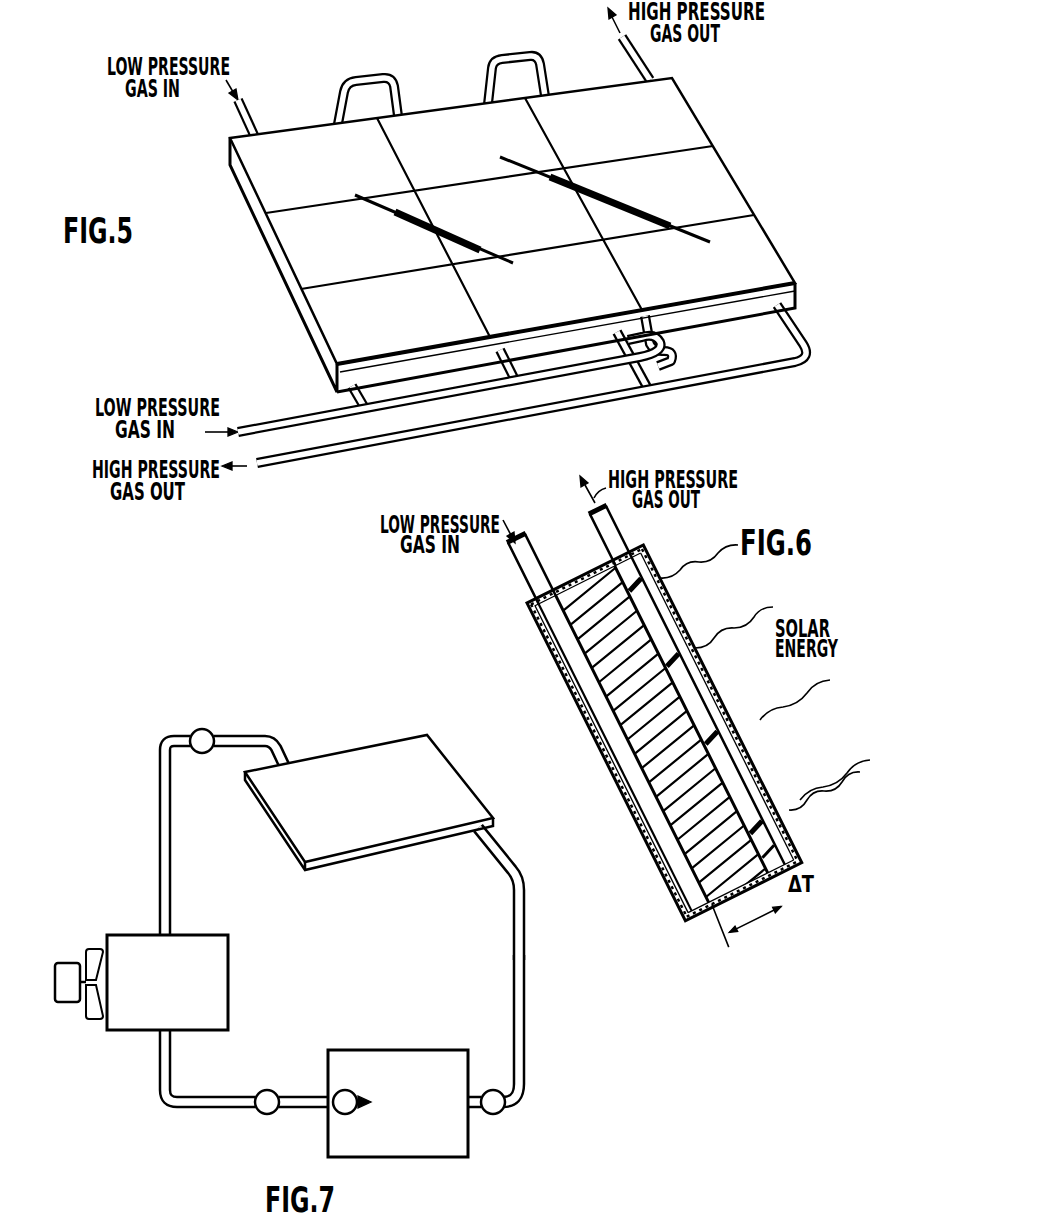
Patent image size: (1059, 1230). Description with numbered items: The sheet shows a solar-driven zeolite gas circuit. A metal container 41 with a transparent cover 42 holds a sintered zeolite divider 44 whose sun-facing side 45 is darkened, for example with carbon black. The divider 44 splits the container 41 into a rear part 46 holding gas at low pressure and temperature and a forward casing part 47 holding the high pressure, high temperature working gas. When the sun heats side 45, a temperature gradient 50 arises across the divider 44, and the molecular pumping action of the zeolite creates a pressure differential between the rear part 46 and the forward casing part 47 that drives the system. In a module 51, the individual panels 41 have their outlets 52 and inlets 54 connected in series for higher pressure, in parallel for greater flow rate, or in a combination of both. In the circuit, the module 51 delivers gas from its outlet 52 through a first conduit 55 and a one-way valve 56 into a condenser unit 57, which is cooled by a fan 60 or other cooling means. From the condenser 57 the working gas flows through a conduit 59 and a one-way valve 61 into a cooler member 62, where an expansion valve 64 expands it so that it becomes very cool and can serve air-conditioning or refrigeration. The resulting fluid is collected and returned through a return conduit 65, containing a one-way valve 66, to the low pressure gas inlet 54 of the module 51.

In FIG. 5, the metal container 41 is at (330, 177).
In FIG. 6, the metal container 41 is at (772, 744).
In FIG. 6, the transparent cover 42 is at (708, 703).
In FIG. 6, the sintered zeolite divider 44 is at (595, 655).
In FIG. 6, the side of zeolite divider 45 is at (665, 628).
In FIG. 6, the rear part 46 is at (603, 738).
In FIG. 6, the forward casing part 47 is at (775, 846).
In FIG. 6, the temperature gradient 50 is at (718, 915).
In FIG. 5, the module 51 is at (262, 268).
In FIG. 7, the module 51 is at (434, 768).
In FIG. 5, the outlet 52 is at (337, 104).
In FIG. 6, the outlet 52 is at (619, 531).
In FIG. 7, the outlet 52 is at (278, 754).
In FIG. 5, the inlet 54 is at (247, 110).
In FIG. 6, the inlet 54 is at (509, 563).
In FIG. 7, the inlet 54 is at (503, 860).
In FIG. 7, the first conduit 55 is at (159, 801).
In FIG. 7, the one-way valve 56 is at (229, 724).
In FIG. 7, the condenser unit 57 is at (202, 935).
In FIG. 7, the conduit 59 is at (159, 1070).
In FIG. 7, the fan 60 is at (66, 962).
In FIG. 7, the one-way valve 61 is at (258, 1091).
In FIG. 7, the cooler member 62 is at (419, 1050).
In FIG. 7, the expansion valve 64 is at (334, 1094).
In FIG. 7, the return conduit 65 is at (526, 1063).
In FIG. 7, the one-way valve 66 is at (493, 1090).